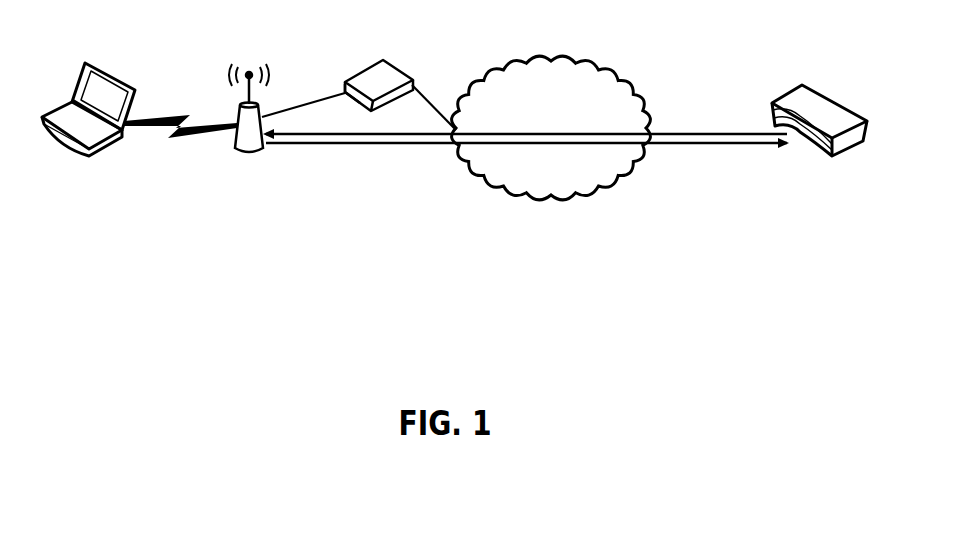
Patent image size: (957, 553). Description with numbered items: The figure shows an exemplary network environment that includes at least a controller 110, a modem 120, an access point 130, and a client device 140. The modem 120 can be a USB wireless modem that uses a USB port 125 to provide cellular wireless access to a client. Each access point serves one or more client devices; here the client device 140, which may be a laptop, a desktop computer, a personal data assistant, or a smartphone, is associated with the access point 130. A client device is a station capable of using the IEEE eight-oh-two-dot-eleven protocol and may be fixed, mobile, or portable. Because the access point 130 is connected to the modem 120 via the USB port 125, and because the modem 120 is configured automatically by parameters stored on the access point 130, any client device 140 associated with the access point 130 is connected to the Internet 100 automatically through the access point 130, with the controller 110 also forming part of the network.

The Internet 100 is at (551, 128).
The controller 110 is at (817, 147).
The modem 120 is at (359, 66).
The USB port 125 is at (322, 79).
The access point 130 is at (249, 137).
The client device 140 is at (139, 136).